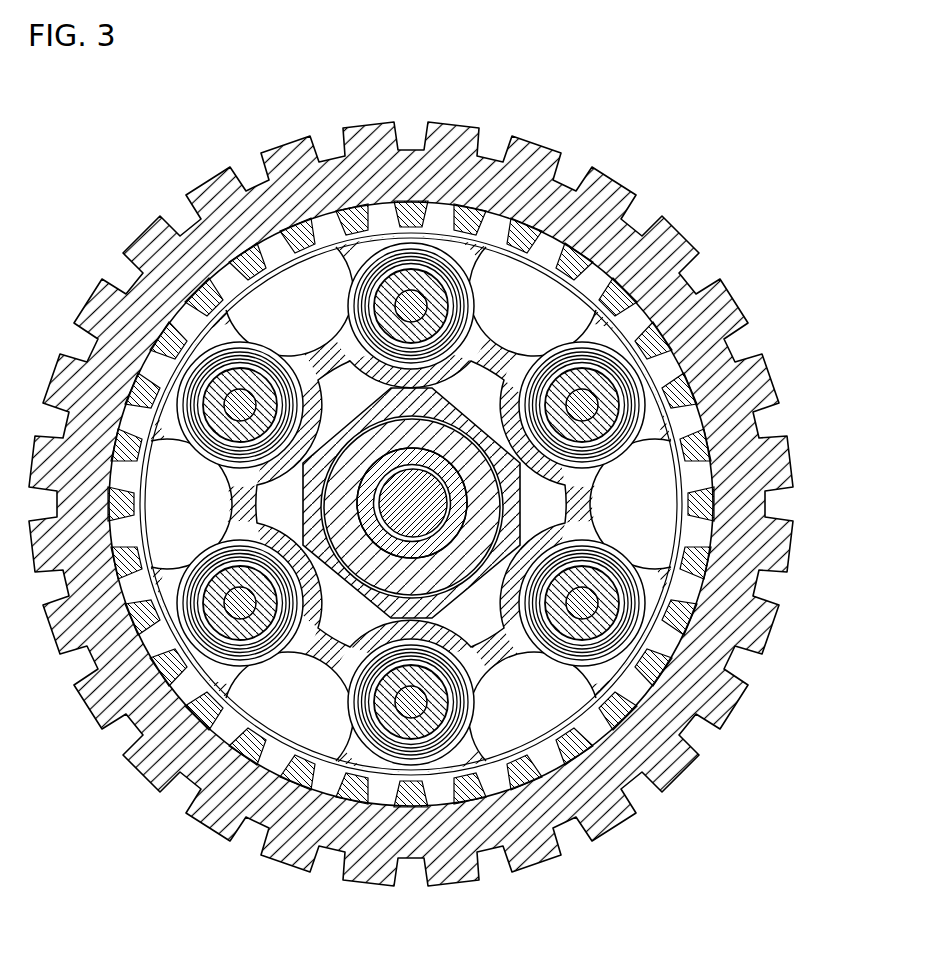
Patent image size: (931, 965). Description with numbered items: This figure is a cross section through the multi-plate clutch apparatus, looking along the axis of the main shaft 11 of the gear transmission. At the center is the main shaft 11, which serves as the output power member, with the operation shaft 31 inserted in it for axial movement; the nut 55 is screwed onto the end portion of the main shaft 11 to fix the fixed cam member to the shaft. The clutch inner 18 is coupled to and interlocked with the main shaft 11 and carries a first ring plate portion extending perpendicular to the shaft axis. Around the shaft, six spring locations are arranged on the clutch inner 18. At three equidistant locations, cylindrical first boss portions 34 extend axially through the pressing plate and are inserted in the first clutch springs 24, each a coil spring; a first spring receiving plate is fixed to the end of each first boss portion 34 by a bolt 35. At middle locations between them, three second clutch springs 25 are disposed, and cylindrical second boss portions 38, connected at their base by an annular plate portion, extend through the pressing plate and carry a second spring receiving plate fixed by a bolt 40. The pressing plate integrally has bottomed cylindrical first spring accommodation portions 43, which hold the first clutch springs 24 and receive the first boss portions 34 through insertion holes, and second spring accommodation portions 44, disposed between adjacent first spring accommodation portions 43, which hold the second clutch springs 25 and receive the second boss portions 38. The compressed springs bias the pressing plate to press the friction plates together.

The main shaft 11 is at (380, 568).
The clutch inner 18 is at (623, 765).
The first clutch spring 24 is at (700, 400).
The second clutch spring 25 is at (425, 258).
The operation shaft 31 is at (424, 484).
The first boss portion 34 is at (594, 378).
The bolt 35 is at (211, 463).
The second boss portion 38 is at (399, 273).
The bolt 40 is at (555, 197).
The first spring accommodation portion 43 is at (690, 424).
The second spring accommodation portion 44 is at (583, 338).
The nut 55 is at (514, 468).